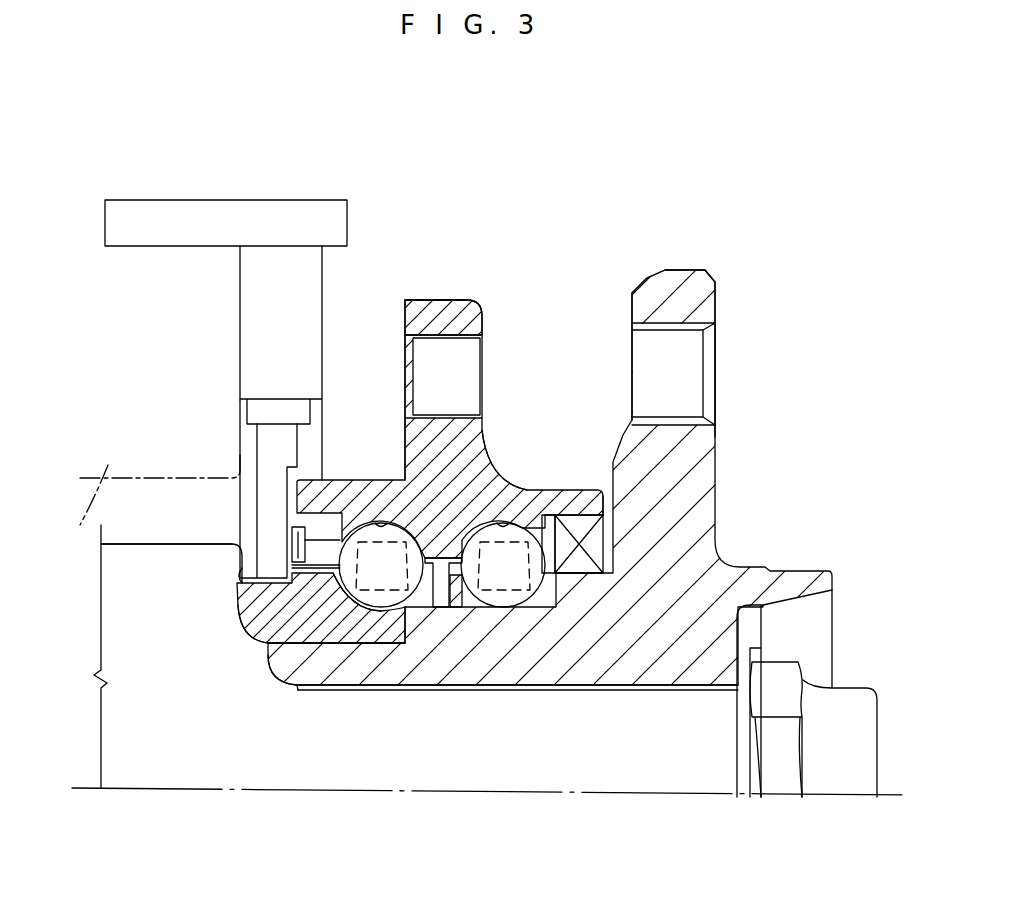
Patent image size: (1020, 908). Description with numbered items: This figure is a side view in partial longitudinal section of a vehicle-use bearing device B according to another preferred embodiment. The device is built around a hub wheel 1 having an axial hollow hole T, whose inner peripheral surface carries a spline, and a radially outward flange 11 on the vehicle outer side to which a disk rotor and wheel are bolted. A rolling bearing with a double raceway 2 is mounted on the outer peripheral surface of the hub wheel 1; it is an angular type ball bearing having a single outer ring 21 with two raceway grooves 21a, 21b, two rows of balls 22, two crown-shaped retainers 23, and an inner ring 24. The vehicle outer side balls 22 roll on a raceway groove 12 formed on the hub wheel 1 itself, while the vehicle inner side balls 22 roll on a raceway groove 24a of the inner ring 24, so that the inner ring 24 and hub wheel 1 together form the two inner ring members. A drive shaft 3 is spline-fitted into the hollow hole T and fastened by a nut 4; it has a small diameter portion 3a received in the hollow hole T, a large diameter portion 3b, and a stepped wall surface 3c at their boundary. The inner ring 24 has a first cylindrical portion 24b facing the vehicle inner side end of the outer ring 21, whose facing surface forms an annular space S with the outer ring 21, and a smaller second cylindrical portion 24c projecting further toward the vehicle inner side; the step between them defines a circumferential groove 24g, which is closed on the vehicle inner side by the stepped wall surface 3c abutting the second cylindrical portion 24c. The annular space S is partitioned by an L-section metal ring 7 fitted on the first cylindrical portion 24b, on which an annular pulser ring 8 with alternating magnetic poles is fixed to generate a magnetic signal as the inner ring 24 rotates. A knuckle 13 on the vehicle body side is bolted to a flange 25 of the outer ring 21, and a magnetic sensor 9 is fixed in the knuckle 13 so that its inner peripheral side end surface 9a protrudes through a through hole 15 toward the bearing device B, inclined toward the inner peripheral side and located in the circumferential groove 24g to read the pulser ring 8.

The hub wheel 1 is at (736, 544).
The rolling bearing with a double raceway 2 is at (558, 466).
The drive shaft 3 is at (163, 537).
The small diameter portion 3a is at (579, 793).
The large diameter portion 3b is at (170, 568).
The stepped wall surface 3c is at (240, 572).
The nut 4 is at (848, 706).
The metal ring 7 is at (328, 535).
The pulser ring 8 is at (290, 526).
The magnetic sensor 9 is at (268, 513).
The inner peripheral side end surface 9a is at (290, 686).
The flange 11 is at (703, 290).
The raceway groove 12 is at (460, 608).
The knuckle 13 is at (79, 525).
The through hole 15 is at (240, 458).
The outer ring 21 is at (492, 478).
The raceway groove 21a is at (530, 488).
The raceway groove 21b is at (404, 450).
The balls 22 is at (392, 520).
The crown-shaped retainers 23 is at (440, 608).
The inner ring 24 is at (240, 627).
The raceway groove 24a is at (368, 612).
The first cylindrical portion 24b is at (335, 652).
The second cylindrical portion 24c is at (262, 642).
The circumferential groove 24g is at (238, 627).
The flange 25 is at (456, 316).
The bearing device B is at (487, 192).
The annular space S is at (342, 480).
The hollow hole T is at (681, 690).